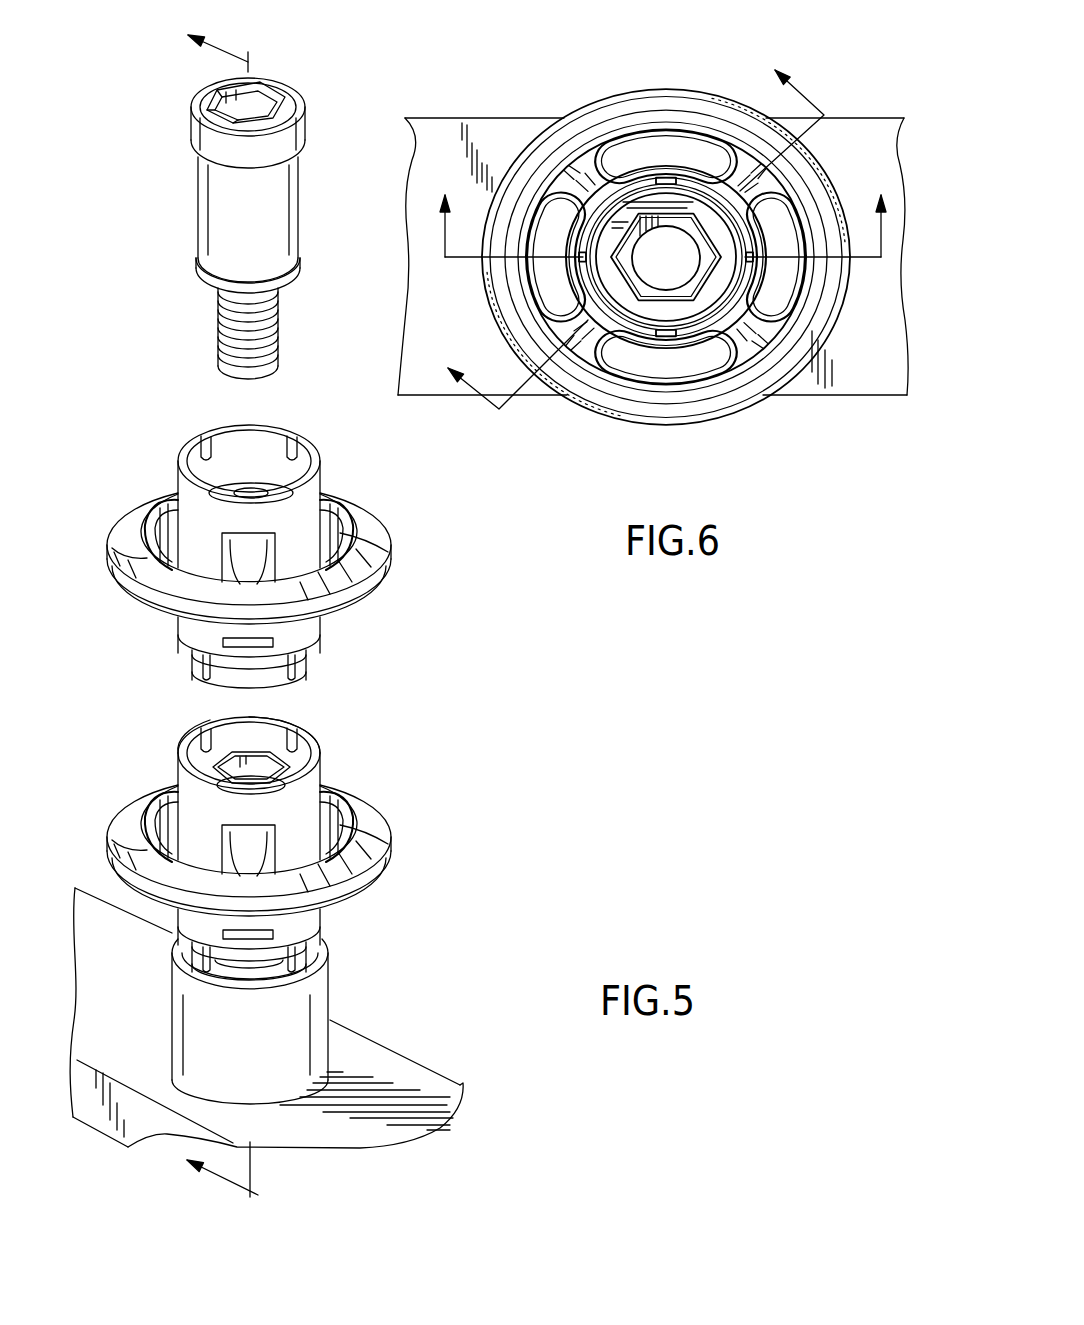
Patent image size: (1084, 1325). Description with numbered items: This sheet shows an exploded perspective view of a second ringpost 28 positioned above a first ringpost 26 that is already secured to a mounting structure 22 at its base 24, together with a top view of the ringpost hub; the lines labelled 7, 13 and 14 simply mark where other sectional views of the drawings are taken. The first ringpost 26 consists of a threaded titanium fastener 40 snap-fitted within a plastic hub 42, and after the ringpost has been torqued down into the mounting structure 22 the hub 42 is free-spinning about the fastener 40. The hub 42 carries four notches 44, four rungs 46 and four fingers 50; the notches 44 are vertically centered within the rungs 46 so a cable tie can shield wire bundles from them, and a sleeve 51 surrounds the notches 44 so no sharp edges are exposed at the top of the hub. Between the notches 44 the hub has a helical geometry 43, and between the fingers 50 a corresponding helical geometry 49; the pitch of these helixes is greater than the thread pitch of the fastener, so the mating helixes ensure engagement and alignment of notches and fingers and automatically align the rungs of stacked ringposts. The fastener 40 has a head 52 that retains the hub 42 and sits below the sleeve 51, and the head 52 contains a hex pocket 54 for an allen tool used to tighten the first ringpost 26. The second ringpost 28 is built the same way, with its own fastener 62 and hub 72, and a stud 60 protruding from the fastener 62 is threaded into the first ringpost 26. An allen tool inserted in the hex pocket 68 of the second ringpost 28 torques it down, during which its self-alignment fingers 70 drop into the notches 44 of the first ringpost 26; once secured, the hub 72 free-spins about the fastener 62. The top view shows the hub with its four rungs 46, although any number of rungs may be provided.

In FIG. 5, the section line 7- 7 is at (211, 604).
In FIG. 6, the section line 13- 13 is at (664, 210).
In FIG. 6, the section line 14- 14 is at (654, 256).
In FIG. 5, the mounting structure 22 is at (403, 1095).
In FIG. 5, the base 24 is at (300, 1035).
In FIG. 5, the first ringpost 26 is at (392, 830).
In FIG. 6, the first ringpost 26 is at (581, 409).
In FIG. 5, the second ringpost 28 is at (393, 553).
In FIG. 6, the fastener 40 is at (713, 292).
In FIG. 5, the hub 42 is at (370, 813).
In FIG. 6, the hub 42 is at (629, 111).
In FIG. 5, the helical geometry 43 is at (250, 753).
In FIG. 5, the notches 44 is at (203, 727).
In FIG. 6, the notches 44 is at (581, 252).
In FIG. 5, the rungs 46 is at (340, 790).
In FIG. 6, the rungs 46 is at (697, 152).
In FIG. 5, the helical geometry 49 is at (230, 963).
In FIG. 5, the fingers 50 is at (293, 963).
In FIG. 5, the sleeve 51 is at (178, 733).
In FIG. 5, the head 52 is at (262, 745).
In FIG. 6, the head 52 is at (600, 215).
In FIG. 5, the hex pocket 54 is at (325, 757).
In FIG. 5, the stud 60 is at (220, 343).
In FIG. 5, the fastener 62 is at (198, 102).
In FIG. 5, the hex pocket 68 is at (268, 97).
In FIG. 5, the self-alignment fingers 70 is at (203, 675).
In FIG. 5, the hub 72 is at (125, 517).